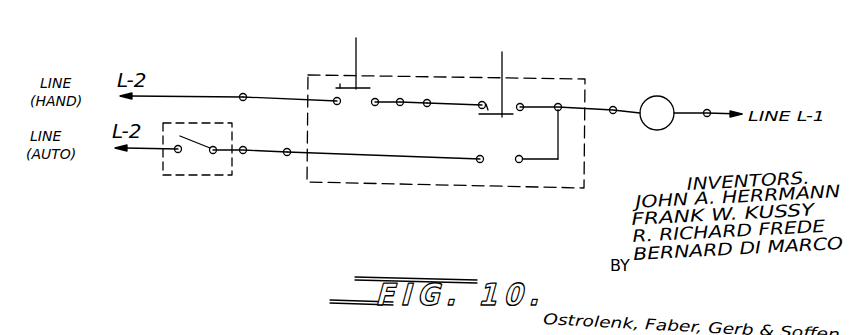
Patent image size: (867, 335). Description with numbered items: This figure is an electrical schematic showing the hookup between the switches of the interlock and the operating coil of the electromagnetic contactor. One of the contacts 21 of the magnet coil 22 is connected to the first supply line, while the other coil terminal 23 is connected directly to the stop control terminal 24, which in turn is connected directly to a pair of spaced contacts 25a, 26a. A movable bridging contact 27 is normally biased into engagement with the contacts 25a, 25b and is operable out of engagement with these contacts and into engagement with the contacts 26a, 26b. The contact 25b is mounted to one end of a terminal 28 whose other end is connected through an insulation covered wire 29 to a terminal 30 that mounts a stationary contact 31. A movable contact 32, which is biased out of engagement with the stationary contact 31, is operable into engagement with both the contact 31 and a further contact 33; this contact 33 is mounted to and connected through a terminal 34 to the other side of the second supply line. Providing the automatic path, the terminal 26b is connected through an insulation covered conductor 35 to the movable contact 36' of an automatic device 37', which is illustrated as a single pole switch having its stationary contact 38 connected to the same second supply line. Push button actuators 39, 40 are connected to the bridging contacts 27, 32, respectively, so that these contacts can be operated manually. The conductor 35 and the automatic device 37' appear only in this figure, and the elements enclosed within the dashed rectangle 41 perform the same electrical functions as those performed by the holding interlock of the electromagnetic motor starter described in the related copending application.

The contact 21 is at (724, 103).
The magnet coil 22 is at (666, 125).
The coil terminal 23 is at (615, 107).
The stop control terminal 24 is at (562, 104).
The contact 25a is at (522, 104).
The contact 25b is at (487, 102).
The contact 26a is at (516, 163).
The terminal 26b is at (484, 161).
The movable bridging contact 27 is at (481, 116).
The terminal 28 is at (430, 98).
The insulation covered wire 29 is at (424, 106).
The terminal 30 is at (397, 105).
The stationary contact 31 is at (372, 105).
The movable contact 32 is at (345, 80).
The contact 33 is at (347, 113).
The terminal 34 is at (246, 94).
The insulation covered conductor 35 is at (287, 156).
The movable contact 36' is at (201, 169).
The automatic device 37' is at (172, 155).
The stationary contact 38 is at (181, 153).
The push button actuator 39 is at (503, 66).
The push button actuator 40 is at (357, 50).
The dashed rectangle 41 is at (352, 183).